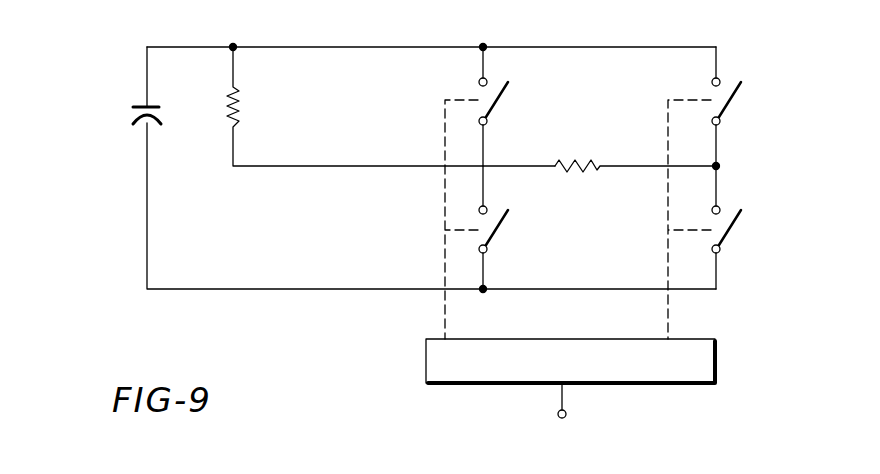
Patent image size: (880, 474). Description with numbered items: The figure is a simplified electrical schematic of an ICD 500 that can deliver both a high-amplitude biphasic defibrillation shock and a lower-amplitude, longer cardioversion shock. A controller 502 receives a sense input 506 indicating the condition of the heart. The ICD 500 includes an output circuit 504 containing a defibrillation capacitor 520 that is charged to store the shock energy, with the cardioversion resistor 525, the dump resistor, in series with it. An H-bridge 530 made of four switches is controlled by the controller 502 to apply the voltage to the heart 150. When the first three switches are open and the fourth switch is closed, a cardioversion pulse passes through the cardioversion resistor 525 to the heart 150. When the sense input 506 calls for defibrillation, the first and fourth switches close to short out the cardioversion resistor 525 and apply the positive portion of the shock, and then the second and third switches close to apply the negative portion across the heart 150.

The ICD 500 is at (397, 315).
The controller 502 is at (573, 339).
The output circuit 504 is at (302, 42).
The sense input 506 is at (639, 402).
The defibrillation capacitor 520 is at (152, 106).
The cardioversion resistor 525 is at (232, 122).
The H-bridge 530 is at (720, 43).
The heart 150 is at (593, 171).